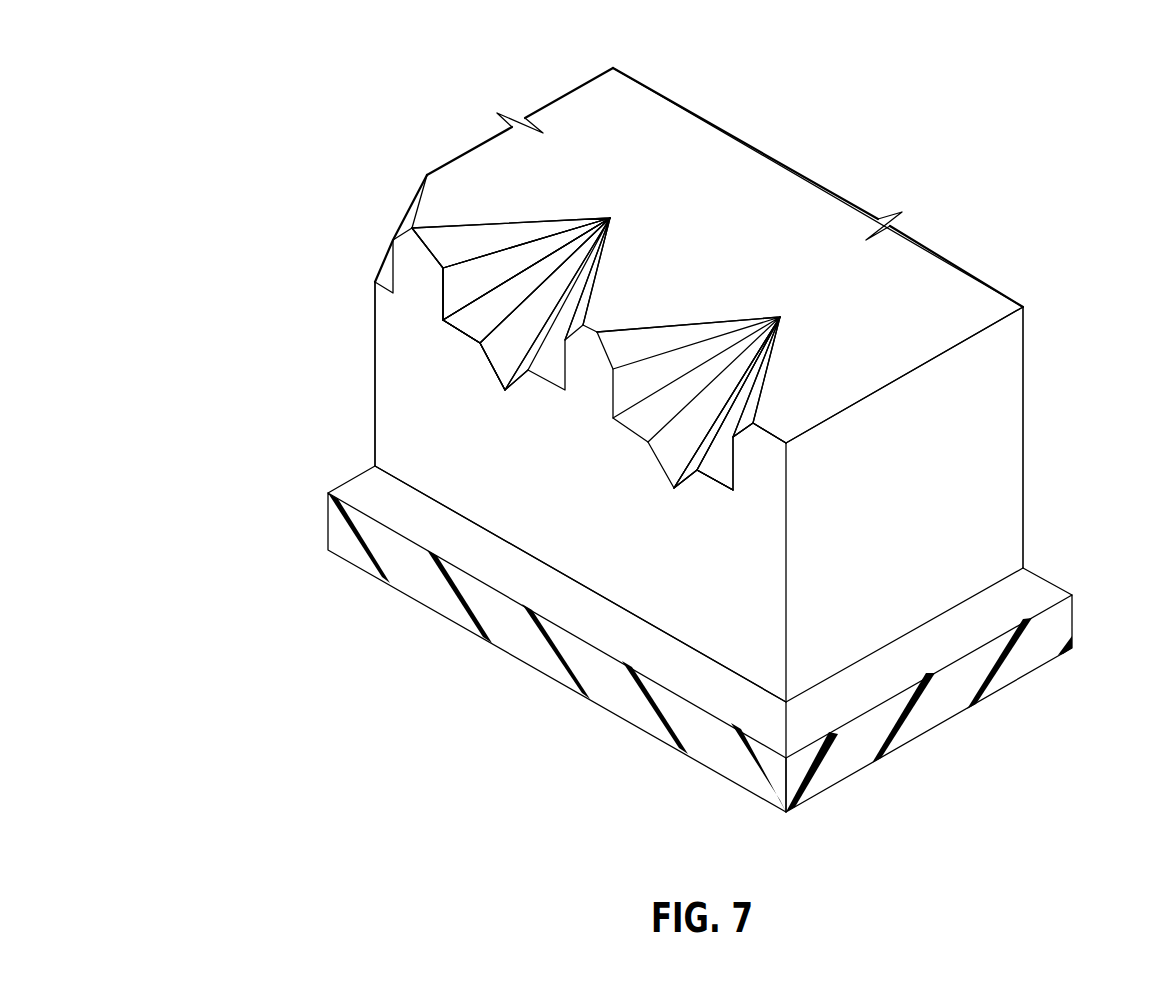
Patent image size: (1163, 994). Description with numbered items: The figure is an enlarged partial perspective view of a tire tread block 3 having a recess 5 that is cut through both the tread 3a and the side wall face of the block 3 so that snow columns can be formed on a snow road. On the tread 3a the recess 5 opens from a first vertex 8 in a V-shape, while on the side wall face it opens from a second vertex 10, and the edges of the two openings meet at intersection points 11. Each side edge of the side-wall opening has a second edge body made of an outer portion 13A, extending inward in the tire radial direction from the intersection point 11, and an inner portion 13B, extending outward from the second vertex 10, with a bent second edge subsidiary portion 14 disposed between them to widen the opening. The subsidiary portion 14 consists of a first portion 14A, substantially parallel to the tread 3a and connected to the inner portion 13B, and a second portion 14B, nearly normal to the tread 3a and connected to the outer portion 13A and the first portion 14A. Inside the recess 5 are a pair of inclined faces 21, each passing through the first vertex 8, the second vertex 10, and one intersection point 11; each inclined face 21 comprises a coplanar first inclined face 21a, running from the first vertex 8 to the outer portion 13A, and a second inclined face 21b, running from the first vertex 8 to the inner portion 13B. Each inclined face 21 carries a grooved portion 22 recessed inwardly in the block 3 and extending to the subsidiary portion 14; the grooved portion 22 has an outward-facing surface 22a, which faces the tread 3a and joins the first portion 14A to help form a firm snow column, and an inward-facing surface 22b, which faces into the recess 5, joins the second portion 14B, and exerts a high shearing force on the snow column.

The block 3 is at (686, 90).
The tread 3a is at (875, 332).
The recess 5 is at (548, 215).
The first vertex 8 is at (610, 217).
The second vertex 10 is at (373, 436).
The intersection point 11 is at (427, 224).
The outer portion 13A is at (745, 432).
The inner portion 13B is at (715, 490).
The second edge subsidiary portion 14 is at (250, 287).
The first portion 14A is at (444, 337).
The second portion 14B is at (442, 293).
The inclined face 21 is at (771, 368).
The first inclined face 21a is at (753, 413).
The second inclined face 21b is at (698, 462).
The grooved portion 22 is at (455, 56).
The outward-facing surface 22a is at (515, 297).
The inward-facing surface 22b is at (465, 283).